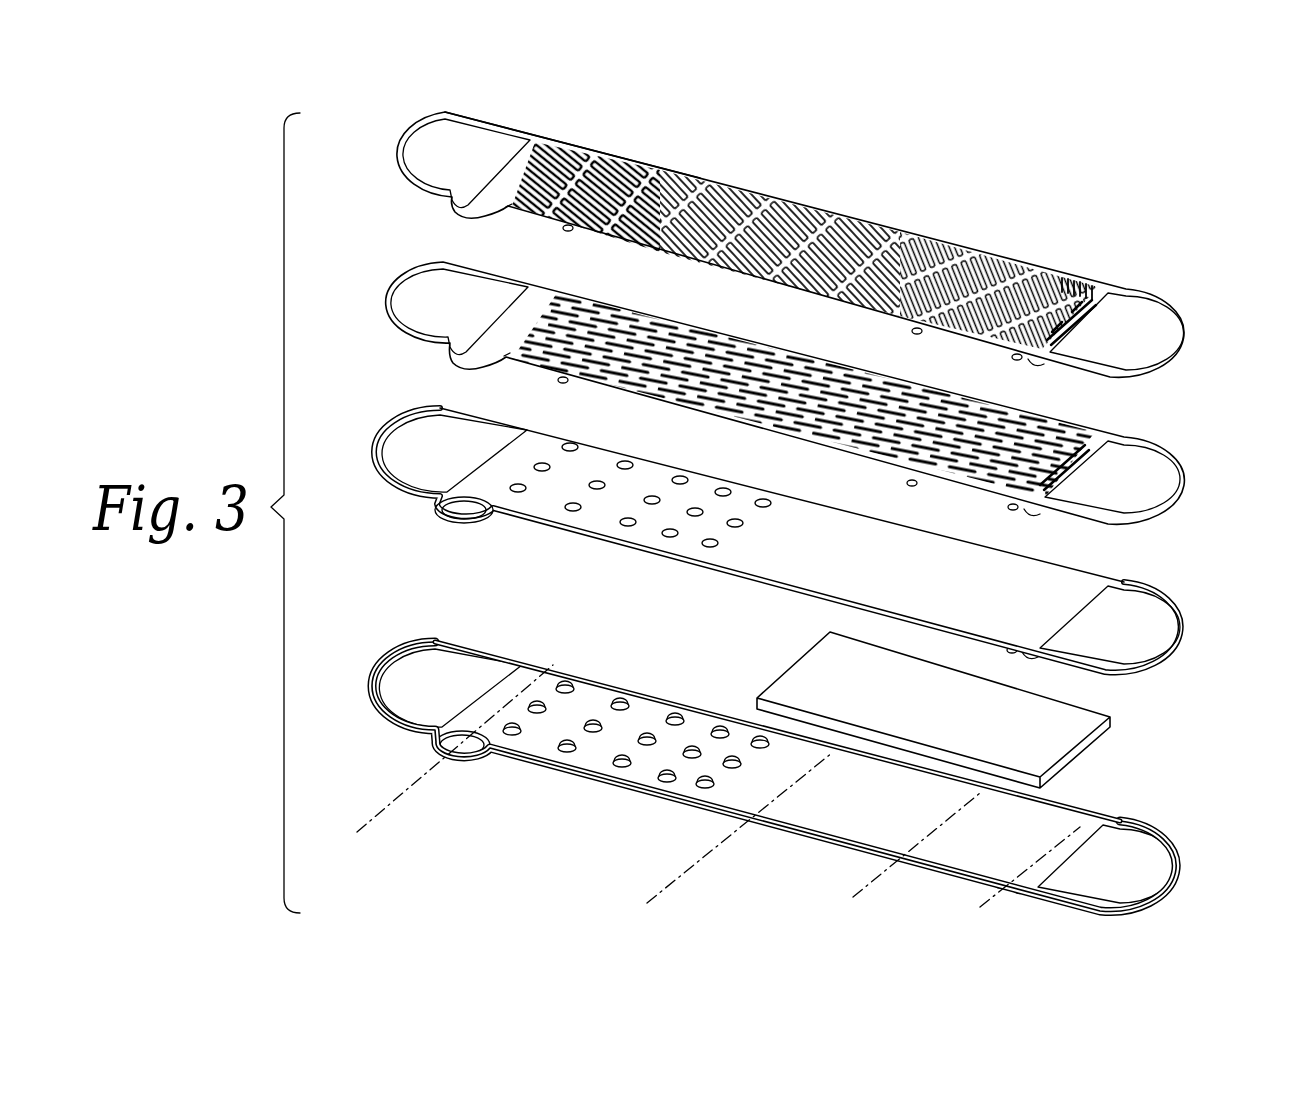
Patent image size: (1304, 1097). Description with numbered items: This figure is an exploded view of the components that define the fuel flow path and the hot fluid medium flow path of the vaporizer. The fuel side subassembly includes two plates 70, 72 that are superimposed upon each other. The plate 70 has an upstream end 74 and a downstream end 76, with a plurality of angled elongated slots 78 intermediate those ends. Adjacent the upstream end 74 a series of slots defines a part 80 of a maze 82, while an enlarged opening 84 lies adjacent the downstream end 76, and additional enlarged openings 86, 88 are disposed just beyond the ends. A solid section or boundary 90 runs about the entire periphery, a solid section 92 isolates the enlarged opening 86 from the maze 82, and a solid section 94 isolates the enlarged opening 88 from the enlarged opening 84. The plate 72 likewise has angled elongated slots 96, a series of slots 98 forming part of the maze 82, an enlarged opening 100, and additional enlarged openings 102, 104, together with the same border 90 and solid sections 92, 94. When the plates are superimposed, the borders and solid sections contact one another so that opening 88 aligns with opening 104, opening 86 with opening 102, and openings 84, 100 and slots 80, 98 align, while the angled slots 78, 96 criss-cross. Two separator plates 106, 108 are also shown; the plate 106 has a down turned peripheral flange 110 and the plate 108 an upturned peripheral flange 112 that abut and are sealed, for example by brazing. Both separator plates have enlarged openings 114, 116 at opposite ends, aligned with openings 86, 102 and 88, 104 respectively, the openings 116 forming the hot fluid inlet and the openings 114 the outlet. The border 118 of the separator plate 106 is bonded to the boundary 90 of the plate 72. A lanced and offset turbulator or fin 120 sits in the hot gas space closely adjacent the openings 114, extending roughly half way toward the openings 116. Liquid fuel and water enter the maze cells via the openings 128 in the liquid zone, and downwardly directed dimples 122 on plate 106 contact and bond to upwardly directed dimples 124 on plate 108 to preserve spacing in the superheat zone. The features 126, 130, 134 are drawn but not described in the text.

The plate 70 is at (790, 244).
The plate 72 is at (957, 363).
The upstream end 74 is at (1121, 285).
The downstream end 76 is at (572, 145).
The angled elongated slots 78 is at (728, 154).
The part of maze 80 is at (1111, 242).
The maze 82 is at (1139, 328).
The enlarged opening 84 is at (420, 171).
The enlarged opening 86 is at (1217, 349).
The enlarged opening 88 is at (379, 123).
The solid section or boundary 90 is at (784, 297).
The solid section 92 is at (1156, 385).
The solid section 94 is at (425, 215).
The angled elongated slots 96 is at (650, 416).
The series of slots 98 is at (1003, 486).
The enlarged opening 100 is at (750, 393).
The enlarged opening 102 is at (1141, 496).
The enlarged opening 104 is at (421, 295).
The separator plate 106 is at (1024, 559).
The separator plate 108 is at (776, 856).
The down turned peripheral flange 110 is at (749, 540).
The upturned peripheral flange 112 is at (815, 777).
The enlarged opening 114 is at (1155, 763).
The enlarged opening 116 is at (409, 565).
The border 118 is at (1156, 620).
The turbulator or fin 120 is at (1015, 710).
The dimples 122 is at (716, 421).
The dimples 124 is at (669, 542).
The notch 126 is at (1133, 626).
The openings 128 is at (1103, 621).
The tab 130 is at (512, 525).
The port 134 is at (463, 672).